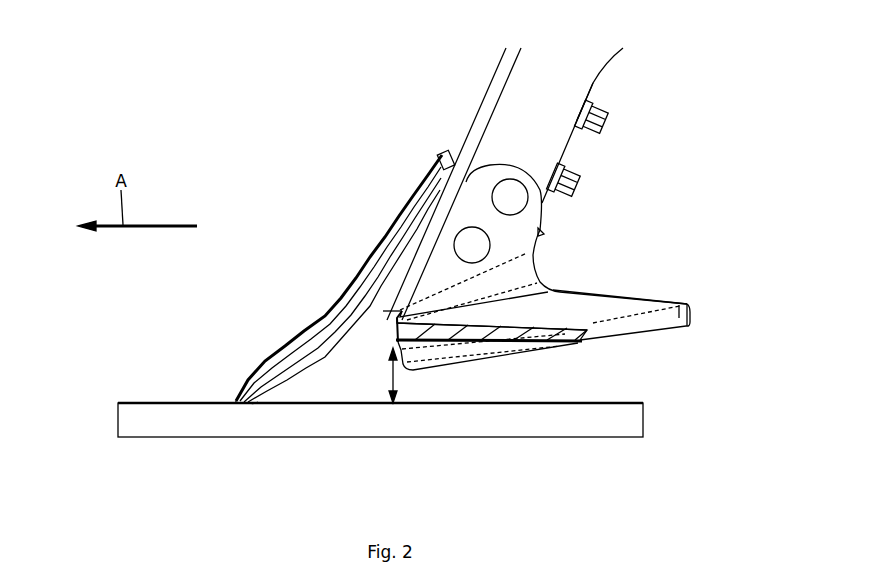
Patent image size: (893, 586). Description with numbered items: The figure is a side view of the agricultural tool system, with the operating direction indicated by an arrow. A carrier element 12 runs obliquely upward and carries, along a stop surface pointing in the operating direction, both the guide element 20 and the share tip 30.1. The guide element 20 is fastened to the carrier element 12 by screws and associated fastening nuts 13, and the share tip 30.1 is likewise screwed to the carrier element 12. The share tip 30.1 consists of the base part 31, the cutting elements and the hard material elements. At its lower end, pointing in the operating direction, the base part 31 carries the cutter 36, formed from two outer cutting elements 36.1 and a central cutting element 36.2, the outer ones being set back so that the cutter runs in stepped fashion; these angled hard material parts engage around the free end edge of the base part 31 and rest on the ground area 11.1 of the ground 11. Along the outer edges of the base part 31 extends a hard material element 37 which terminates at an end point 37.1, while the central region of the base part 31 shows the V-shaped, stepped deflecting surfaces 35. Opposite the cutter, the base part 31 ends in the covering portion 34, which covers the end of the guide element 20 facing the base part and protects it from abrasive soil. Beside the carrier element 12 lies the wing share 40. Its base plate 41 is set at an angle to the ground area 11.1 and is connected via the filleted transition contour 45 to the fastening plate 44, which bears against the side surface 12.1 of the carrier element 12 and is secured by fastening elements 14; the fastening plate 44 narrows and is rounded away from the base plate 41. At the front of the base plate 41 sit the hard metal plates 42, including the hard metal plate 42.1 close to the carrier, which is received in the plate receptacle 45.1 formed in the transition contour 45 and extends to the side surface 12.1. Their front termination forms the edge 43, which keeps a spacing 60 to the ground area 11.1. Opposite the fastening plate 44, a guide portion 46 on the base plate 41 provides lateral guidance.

The ground 11 is at (160, 423).
The ground area 11.1 is at (148, 402).
The carrier element 12 is at (592, 63).
The side surface 12.1 is at (573, 85).
The fastening nuts 13 is at (578, 185).
The fastening elements 14 is at (472, 245).
The guide element 20 is at (505, 78).
The share tip 30.1 is at (467, 240).
The base part 31 is at (430, 203).
The covering portion 34 is at (443, 158).
The deflecting surfaces 35 is at (403, 223).
The cutter 36 is at (305, 278).
The outer cutting elements 36.1 is at (257, 403).
The central cutting element 36.2 is at (237, 400).
The hard material element 37 is at (313, 327).
The end point 37.1 is at (327, 310).
The wing share 40 is at (660, 318).
The base plate 41 is at (625, 308).
The hard metal plates 42 is at (583, 340).
The hard metal plate close to the carrier 42.1 is at (412, 328).
The edge 43 is at (553, 345).
The fastening plate 44 is at (523, 253).
The transition contour 45 is at (520, 283).
The plate receptacle 45.1 is at (395, 318).
The guide portion 46 is at (438, 357).
The spacing 60 is at (393, 392).